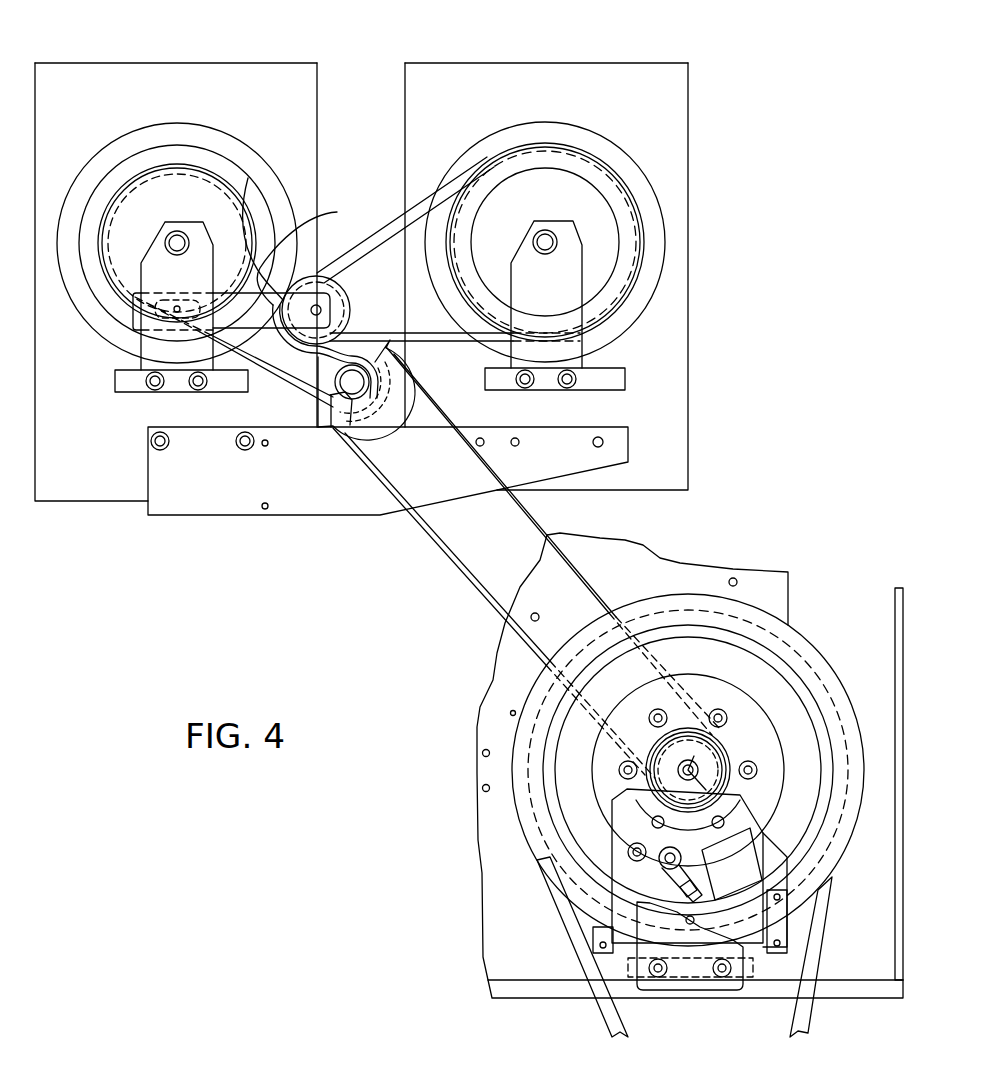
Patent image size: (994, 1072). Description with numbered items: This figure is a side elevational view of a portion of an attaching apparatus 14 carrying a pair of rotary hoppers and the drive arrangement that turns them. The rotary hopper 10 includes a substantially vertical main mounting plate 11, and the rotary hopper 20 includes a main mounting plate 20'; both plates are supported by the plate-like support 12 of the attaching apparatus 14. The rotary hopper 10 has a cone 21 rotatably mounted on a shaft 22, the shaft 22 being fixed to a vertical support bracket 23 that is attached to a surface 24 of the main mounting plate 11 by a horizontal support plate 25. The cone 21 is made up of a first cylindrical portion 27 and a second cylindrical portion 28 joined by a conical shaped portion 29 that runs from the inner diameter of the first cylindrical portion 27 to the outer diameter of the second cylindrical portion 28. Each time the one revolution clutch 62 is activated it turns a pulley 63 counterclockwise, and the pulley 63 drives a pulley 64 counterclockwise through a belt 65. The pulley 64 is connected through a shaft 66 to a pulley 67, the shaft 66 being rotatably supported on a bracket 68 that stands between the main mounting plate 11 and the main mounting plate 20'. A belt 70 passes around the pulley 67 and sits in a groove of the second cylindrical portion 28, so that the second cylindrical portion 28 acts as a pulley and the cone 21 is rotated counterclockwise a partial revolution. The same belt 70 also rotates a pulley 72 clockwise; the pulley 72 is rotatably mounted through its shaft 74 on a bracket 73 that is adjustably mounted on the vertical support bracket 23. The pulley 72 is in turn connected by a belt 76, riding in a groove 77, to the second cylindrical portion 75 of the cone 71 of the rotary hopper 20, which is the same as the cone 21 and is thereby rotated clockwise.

The rotary hopper 10 is at (262, 57).
The main mounting plate 11 is at (318, 118).
The plate-like support 12 is at (510, 685).
The attaching apparatus 14 is at (415, 775).
The rotary hopper 20 is at (546, 36).
The main mounting plate 20' is at (566, 276).
The cone 21 is at (298, 198).
The shaft 22 is at (174, 231).
The vertical support bracket 23 is at (141, 355).
The surface 24 is at (66, 108).
The horizontal support plate 25 is at (130, 392).
The first cylindrical portion 27 is at (238, 138).
The second cylindrical portion 28 is at (337, 212).
The conical shaped portion 29 is at (248, 178).
The one revolution clutch 62 is at (590, 852).
The pulley 63 is at (722, 748).
The pulley 64 is at (388, 415).
The belt 65 is at (438, 547).
The shaft 66 is at (347, 433).
The pulley 67 is at (335, 372).
The bracket 68 is at (316, 420).
The belt 70 is at (282, 385).
The cone 71 is at (667, 204).
The pulley 72 is at (347, 292).
The bracket 73 is at (133, 308).
The shaft 74 is at (322, 311).
The second cylindrical portion 75 is at (455, 262).
The belt 76 is at (414, 203).
The groove 77 is at (613, 157).